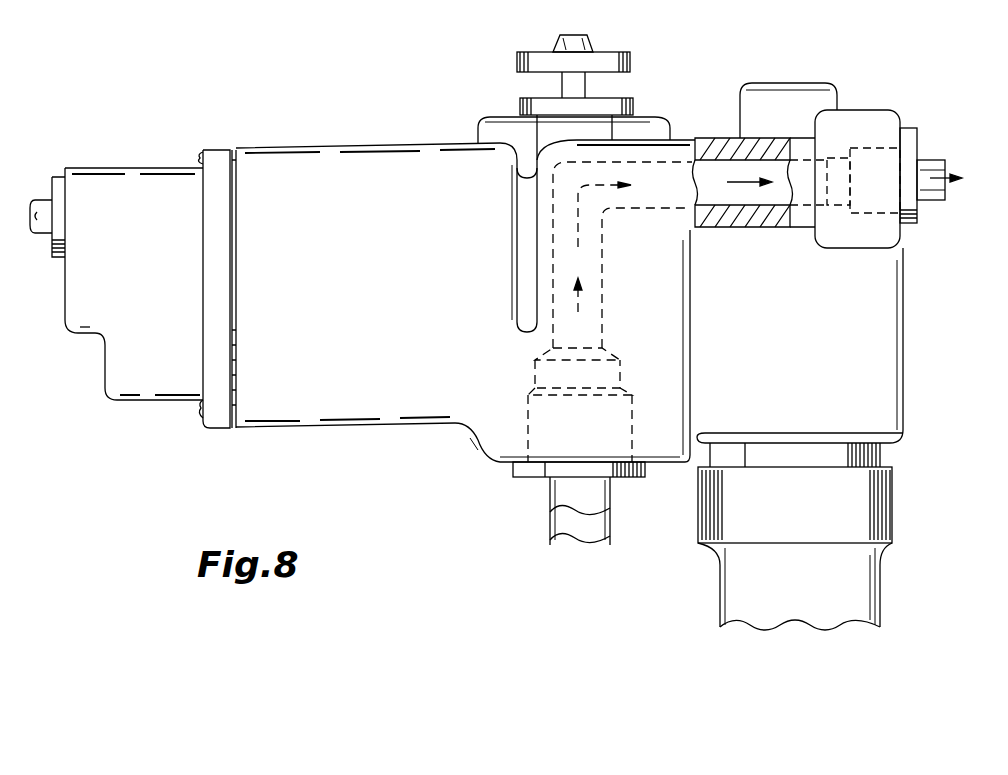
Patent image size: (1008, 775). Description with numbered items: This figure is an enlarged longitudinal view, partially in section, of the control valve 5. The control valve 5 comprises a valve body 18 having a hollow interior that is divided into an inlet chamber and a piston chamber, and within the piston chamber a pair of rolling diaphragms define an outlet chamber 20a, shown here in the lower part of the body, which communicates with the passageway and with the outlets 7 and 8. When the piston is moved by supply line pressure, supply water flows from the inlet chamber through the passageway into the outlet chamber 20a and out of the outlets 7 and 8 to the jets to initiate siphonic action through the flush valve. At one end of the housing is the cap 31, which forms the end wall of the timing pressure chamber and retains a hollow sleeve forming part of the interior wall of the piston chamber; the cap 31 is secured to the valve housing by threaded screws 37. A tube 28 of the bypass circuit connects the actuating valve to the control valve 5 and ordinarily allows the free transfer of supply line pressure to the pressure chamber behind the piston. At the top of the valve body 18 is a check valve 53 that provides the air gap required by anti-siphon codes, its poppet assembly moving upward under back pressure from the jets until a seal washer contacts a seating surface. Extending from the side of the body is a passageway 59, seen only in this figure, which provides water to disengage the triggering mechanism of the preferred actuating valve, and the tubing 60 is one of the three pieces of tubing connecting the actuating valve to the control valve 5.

The control valve 5 is at (435, 140).
The outlet 7 is at (600, 494).
The outlet 8 is at (598, 530).
The valve body 18 is at (342, 148).
The outlet chamber 20a is at (600, 437).
The tube 28 is at (46, 208).
The cap 31 is at (213, 150).
The threaded screws 37 is at (200, 153).
The check valve 53 is at (633, 65).
The passageway 59 is at (711, 139).
The tubing 60 is at (920, 160).